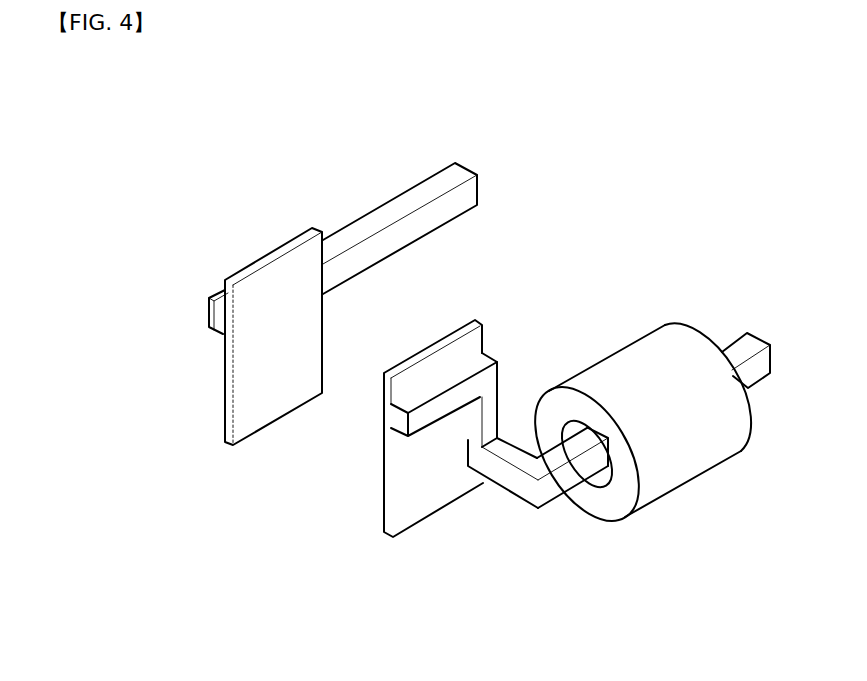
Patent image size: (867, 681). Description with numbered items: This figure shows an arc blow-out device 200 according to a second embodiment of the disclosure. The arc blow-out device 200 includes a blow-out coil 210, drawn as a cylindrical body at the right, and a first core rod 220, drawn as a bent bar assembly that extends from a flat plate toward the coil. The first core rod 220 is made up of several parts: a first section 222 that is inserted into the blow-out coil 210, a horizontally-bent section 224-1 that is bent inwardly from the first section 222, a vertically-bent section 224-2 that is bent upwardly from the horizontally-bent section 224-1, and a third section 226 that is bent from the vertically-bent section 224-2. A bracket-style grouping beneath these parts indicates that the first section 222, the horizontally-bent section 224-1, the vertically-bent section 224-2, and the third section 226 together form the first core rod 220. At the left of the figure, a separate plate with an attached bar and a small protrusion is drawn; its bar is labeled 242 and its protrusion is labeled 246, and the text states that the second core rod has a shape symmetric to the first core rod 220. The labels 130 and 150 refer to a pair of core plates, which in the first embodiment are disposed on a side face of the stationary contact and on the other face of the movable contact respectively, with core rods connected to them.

The arc blow-out device 200 is at (662, 179).
The blow-out coil 210 is at (688, 465).
The first core rod 220 is at (578, 622).
The first section 222 is at (566, 478).
The horizontally-bent section 224-1 is at (512, 478).
The vertically-bent section 224-2 is at (472, 430).
The third section 226 is at (420, 418).
The guide bar 242 is at (357, 230).
The protrusion 246 is at (217, 312).
The core plate 150 is at (228, 387).
The core plate 130 is at (387, 470).